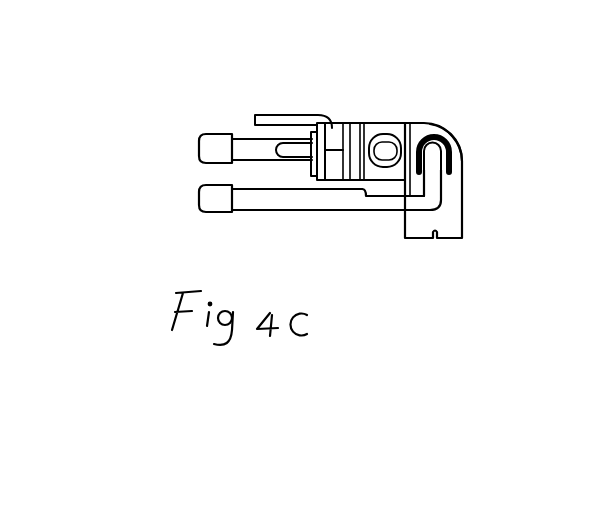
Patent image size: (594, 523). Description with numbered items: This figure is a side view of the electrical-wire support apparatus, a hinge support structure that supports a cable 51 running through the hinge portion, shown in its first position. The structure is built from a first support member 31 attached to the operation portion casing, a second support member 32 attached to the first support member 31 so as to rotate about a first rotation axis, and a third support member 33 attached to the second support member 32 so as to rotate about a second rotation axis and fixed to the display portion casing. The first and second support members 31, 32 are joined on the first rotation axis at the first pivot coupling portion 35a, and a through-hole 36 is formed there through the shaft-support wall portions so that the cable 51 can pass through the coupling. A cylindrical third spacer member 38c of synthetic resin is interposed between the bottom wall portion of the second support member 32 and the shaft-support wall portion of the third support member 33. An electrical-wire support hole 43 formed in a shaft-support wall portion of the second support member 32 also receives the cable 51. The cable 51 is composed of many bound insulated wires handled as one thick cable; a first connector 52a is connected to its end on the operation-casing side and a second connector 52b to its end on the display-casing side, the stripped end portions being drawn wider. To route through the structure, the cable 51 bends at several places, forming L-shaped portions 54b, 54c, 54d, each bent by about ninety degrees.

The first support member 31 is at (463, 190).
The second support member 32 is at (383, 123).
The third support member 33 is at (287, 115).
The first pivot coupling portion 35a is at (461, 154).
The through-hole 36 is at (462, 150).
The third spacer member 38c is at (340, 123).
The electrical-wire support hole 43 is at (412, 123).
The cable 51 is at (283, 203).
The first connector 52a is at (207, 203).
The second connector 52b is at (216, 140).
The L-shaped portion 54b is at (378, 203).
The L-shaped portion 54c is at (425, 193).
The L-shaped portion 54d is at (447, 130).